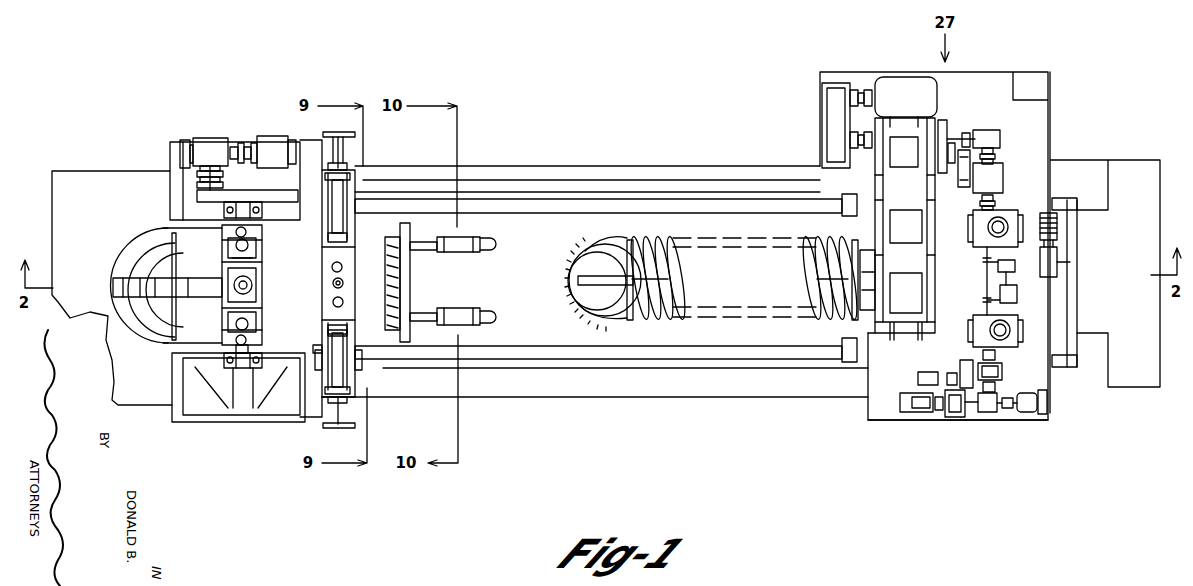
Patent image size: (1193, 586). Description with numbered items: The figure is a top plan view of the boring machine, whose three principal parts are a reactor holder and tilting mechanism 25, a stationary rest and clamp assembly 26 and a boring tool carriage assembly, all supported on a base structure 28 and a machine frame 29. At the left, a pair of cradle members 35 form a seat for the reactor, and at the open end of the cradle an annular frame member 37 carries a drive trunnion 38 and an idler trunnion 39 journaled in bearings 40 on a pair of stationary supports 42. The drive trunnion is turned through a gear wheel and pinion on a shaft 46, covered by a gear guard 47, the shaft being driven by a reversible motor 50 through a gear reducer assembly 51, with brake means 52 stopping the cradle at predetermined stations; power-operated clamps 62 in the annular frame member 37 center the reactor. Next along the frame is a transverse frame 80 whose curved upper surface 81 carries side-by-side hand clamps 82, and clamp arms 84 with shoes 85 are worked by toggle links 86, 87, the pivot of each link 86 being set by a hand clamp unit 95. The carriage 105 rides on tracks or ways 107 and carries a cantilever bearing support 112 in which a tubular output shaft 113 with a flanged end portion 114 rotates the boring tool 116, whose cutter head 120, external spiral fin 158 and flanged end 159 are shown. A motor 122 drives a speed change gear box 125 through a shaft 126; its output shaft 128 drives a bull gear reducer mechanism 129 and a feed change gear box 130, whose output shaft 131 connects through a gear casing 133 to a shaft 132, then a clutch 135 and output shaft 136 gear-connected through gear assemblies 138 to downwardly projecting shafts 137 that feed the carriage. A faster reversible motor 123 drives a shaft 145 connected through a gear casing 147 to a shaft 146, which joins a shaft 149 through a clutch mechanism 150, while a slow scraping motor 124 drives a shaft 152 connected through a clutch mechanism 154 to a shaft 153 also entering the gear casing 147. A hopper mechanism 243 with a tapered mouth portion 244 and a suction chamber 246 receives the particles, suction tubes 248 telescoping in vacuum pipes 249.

The reactor holder and tilting mechanism 25 is at (152, 222).
The stationary rest and clamp assembly 26 is at (341, 115).
The base structure 28 is at (578, 166).
The machine frame 29 is at (533, 192).
The cradle members 35 is at (125, 276).
The annular frame member 37 is at (280, 264).
The drive trunnion 38 is at (250, 226).
The idler trunnion 39 is at (250, 346).
The bearings 40 is at (262, 208).
The stationary supports 42 is at (192, 210).
The shaft 46 is at (218, 172).
The gear guard 47 is at (285, 196).
The reversible motor 50 is at (275, 145).
The gear reducer assembly 51 is at (208, 143).
The brake means 52 is at (183, 150).
The power-operated clamps 62 is at (248, 286).
The transverse frame 80 is at (345, 334).
The curved upper surface 81 is at (345, 256).
The hand clamps 82 is at (344, 283).
The clamp arms 84 is at (345, 225).
The shoes 85 is at (340, 236).
The links 86 is at (322, 365).
The links 87 is at (320, 356).
The hand clamp unit 95 is at (333, 134).
The carriage 105 is at (878, 392).
The tracks or ways 107 is at (553, 213).
The cantilever bearing support 112 is at (925, 304).
The tubular output shaft 113 is at (862, 244).
The flanged end portion 114 is at (862, 312).
The boring tool 116 is at (713, 240).
The cutter head 120 is at (585, 270).
The motor 122 is at (912, 82).
The motor 123 is at (1028, 412).
The motor 124 is at (912, 410).
The speed change gear box 125 is at (820, 108).
The shaft 126 is at (858, 92).
The output shaft 128 is at (850, 139).
The bull gear reducer mechanism 129 is at (898, 198).
The feed change gear box 130 is at (941, 125).
The output shaft 131 is at (950, 136).
The shaft 132 is at (998, 152).
The gear casing 133 is at (988, 128).
The clutch 135 is at (1005, 174).
The output shaft 136 is at (993, 202).
The downwardly projecting shafts 137 is at (995, 235).
The gear assemblies 138 is at (978, 222).
The shaft 145 is at (1008, 410).
The shaft 146 is at (995, 388).
The gear casing 147 is at (990, 412).
The shaft 149 is at (1000, 358).
The clutch mechanism 150 is at (995, 373).
The shaft 152 is at (937, 412).
The shaft 153 is at (958, 416).
The clutch mechanism 154 is at (955, 412).
The external spiral fin 158 is at (645, 237).
The flanged end 159 is at (838, 240).
The hopper mechanism 243 is at (405, 283).
The tapered mouth portion 244 is at (398, 262).
The suction chamber 246 is at (408, 300).
The suction tubes 248 is at (428, 243).
The pipes 249 is at (470, 246).